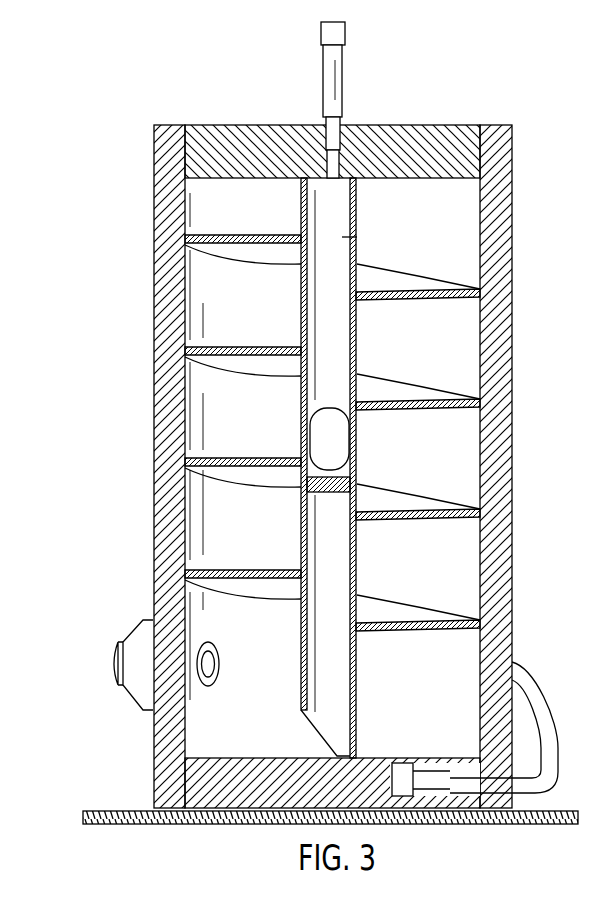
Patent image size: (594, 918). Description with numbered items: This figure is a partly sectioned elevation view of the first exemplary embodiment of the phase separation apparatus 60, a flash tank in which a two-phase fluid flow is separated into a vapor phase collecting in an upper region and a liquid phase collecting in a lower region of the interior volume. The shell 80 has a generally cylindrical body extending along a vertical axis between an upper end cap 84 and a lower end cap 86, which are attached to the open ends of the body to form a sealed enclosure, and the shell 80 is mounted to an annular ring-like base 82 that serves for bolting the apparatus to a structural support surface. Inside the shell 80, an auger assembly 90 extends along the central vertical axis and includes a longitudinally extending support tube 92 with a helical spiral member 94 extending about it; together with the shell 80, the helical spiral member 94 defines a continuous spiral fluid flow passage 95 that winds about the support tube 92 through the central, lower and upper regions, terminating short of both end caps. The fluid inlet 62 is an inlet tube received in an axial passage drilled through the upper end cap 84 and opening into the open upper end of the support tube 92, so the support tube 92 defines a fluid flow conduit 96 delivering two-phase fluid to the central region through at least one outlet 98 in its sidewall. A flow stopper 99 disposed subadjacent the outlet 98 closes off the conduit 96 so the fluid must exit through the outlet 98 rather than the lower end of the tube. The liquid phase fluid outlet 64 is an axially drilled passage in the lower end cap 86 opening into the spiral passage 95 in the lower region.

The phase separation apparatus 60 is at (524, 412).
The fluid inlet 62 is at (345, 70).
The liquid phase fluid outlet 64 is at (446, 765).
The shell 80 is at (155, 240).
The base 82 is at (112, 810).
The upper end cap 84 is at (268, 125).
The lower end cap 86 is at (247, 758).
The auger assembly 90 is at (399, 242).
The support tube 92 is at (357, 336).
The helical spiral member 94 is at (428, 283).
The continuous spiral fluid flow passage 95 is at (252, 410).
The fluid flow conduit 96 is at (357, 237).
The outlet 98 is at (336, 432).
The flow stopper 99 is at (403, 520).